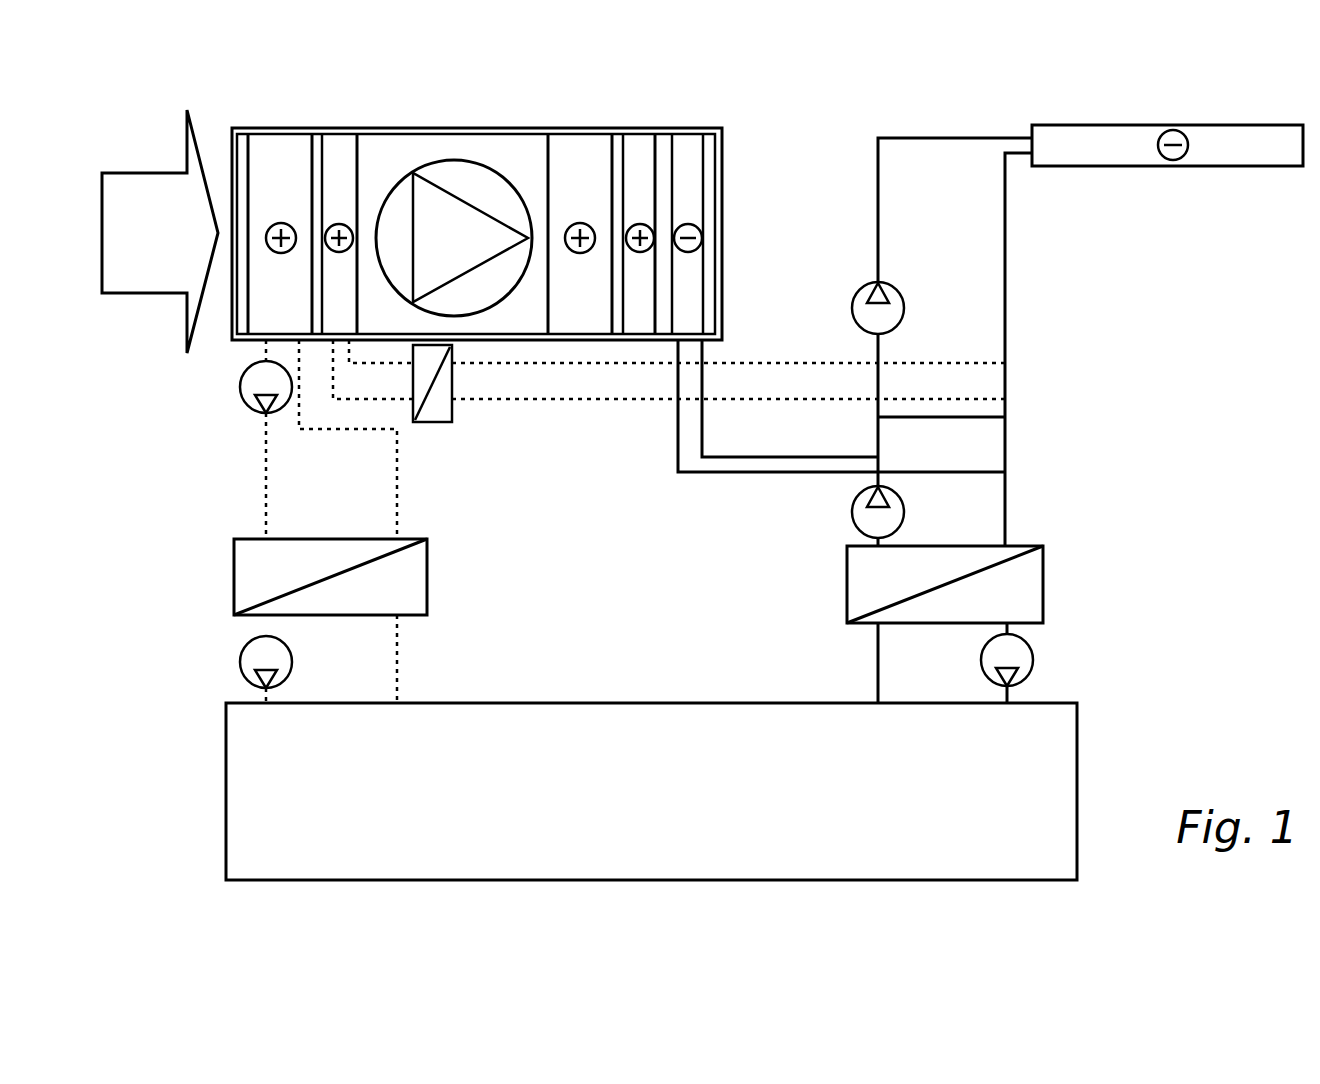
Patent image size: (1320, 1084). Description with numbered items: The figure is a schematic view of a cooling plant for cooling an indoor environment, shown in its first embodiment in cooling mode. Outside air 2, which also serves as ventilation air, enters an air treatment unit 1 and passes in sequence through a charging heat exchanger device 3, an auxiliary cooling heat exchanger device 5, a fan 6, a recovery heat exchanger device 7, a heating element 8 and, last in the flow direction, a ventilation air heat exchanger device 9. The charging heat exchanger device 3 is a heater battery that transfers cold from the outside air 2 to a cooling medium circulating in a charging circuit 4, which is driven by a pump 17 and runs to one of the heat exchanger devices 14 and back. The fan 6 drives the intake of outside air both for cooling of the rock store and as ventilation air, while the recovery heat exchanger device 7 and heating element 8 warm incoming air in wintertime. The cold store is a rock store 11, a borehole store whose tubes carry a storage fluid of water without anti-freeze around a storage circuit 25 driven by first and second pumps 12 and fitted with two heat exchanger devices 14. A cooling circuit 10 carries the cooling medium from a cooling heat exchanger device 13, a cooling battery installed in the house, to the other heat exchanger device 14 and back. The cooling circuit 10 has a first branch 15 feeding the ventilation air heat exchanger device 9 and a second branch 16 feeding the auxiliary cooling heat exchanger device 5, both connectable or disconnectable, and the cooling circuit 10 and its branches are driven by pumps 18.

The air treatment unit 1 is at (420, 128).
The outside air 2 is at (158, 190).
The charging heat exchanger device 3 is at (285, 152).
The charging circuit 4 is at (254, 487).
The auxiliary cooling heat exchanger device 5 is at (340, 148).
The fan 6 is at (485, 190).
The recovery heat exchanger device 7 is at (580, 175).
The heating element 8 is at (638, 178).
The ventilation air heat exchanger device 9 is at (690, 165).
The cooling circuit 10 is at (1014, 255).
The rock store 11 is at (1022, 763).
The pumps 12 is at (253, 658).
The cooling heat exchanger device 13 is at (1255, 140).
The heat exchanger devices 14 is at (258, 577).
The first branch 15 is at (832, 446).
The second branch 16 is at (493, 404).
The pump 17 is at (250, 382).
The pumps 18 is at (863, 305).
The storage circuit 25 is at (407, 663).